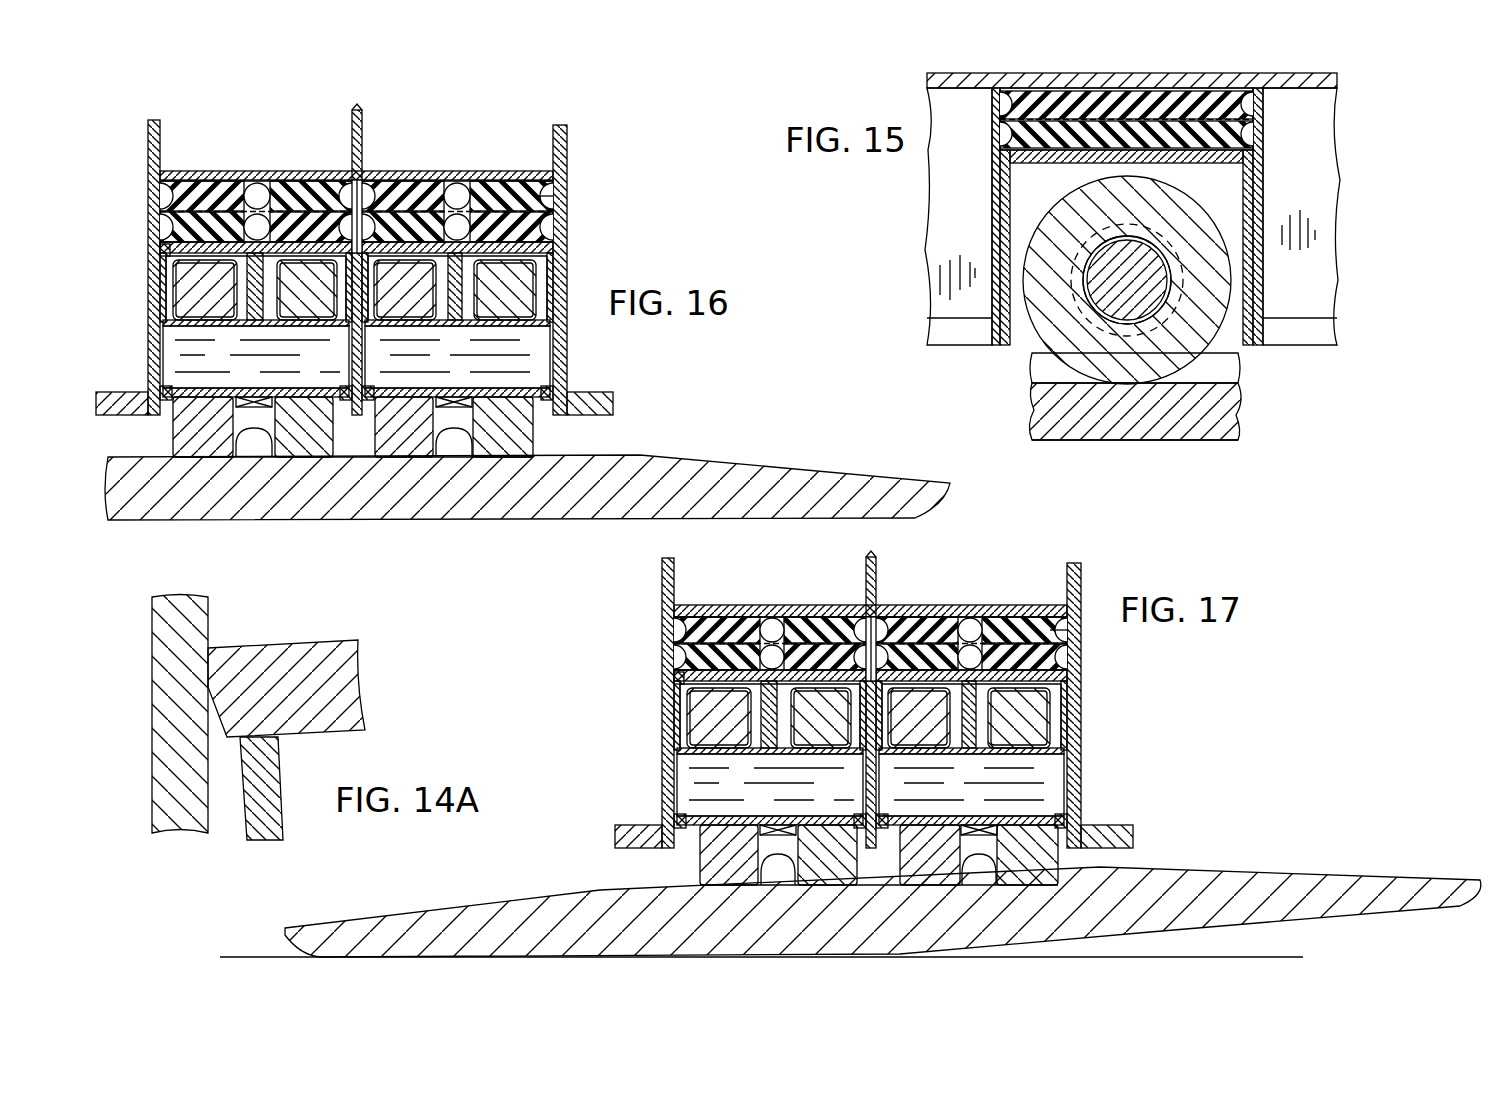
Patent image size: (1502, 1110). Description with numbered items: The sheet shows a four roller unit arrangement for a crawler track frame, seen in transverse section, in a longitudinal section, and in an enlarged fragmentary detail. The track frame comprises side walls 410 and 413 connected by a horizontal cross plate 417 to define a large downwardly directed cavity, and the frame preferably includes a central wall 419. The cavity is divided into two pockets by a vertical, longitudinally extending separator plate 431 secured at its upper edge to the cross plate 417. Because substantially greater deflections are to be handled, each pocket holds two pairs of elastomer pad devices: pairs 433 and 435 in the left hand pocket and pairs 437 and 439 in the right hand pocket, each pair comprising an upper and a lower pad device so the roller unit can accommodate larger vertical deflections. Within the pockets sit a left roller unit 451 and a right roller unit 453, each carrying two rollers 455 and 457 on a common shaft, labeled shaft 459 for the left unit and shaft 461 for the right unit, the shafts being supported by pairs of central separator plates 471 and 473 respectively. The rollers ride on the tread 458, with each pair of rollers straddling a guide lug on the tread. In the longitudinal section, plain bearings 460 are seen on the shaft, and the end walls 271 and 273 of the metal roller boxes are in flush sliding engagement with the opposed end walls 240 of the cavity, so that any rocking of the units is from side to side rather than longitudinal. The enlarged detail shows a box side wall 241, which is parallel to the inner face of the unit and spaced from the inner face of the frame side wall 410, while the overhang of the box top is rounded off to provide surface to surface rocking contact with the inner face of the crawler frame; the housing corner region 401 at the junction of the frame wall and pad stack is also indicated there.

In FIG. 15, the end walls of the cavity 240 is at (1000, 345).
In FIG. 14A, the side wall 241 is at (283, 825).
In FIG. 15, the end wall 271 is at (1000, 218).
In FIG. 15, the end wall 273 is at (1255, 182).
In FIG. 17, the housing corner 401 is at (631, 702).
In FIG. 16, the side wall 410 is at (150, 334).
In FIG. 17, the side wall 410 is at (644, 703).
In FIG. 14A, the side wall 410 is at (165, 742).
In FIG. 16, the side wall 413 is at (566, 344).
In FIG. 17, the side wall 413 is at (1112, 705).
In FIG. 16, the horizontal cross plate 417 is at (490, 185).
In FIG. 17, the horizontal cross plate 417 is at (870, 576).
In FIG. 16, the central wall 419 is at (365, 117).
In FIG. 17, the central wall 419 is at (903, 690).
In FIG. 16, the separator plate 431 is at (368, 198).
In FIG. 17, the separator plate 431 is at (899, 621).
In FIG. 16, the elastomer pad device 433 is at (190, 190).
In FIG. 17, the elastomer pad device 433 is at (870, 608).
In FIG. 15, the elastomer pad device 433 is at (1015, 138).
In FIG. 16, the elastomer pad device 435 is at (275, 190).
In FIG. 17, the elastomer pad device 435 is at (870, 615).
In FIG. 15, the elastomer pad device 435 is at (1020, 100).
In FIG. 16, the elastomer pad device 437 is at (410, 192).
In FIG. 17, the elastomer pad device 437 is at (971, 615).
In FIG. 16, the elastomer pad device 439 is at (535, 196).
In FIG. 17, the elastomer pad device 439 is at (1084, 581).
In FIG. 16, the roller unit 451 is at (162, 246).
In FIG. 17, the roller unit 451 is at (633, 693).
In FIG. 14A, the roller unit 451 is at (312, 708).
In FIG. 16, the roller unit 453 is at (552, 250).
In FIG. 17, the roller unit 453 is at (913, 656).
In FIG. 15, the roller unit 453 is at (1170, 158).
In FIG. 16, the roller 455 is at (176, 438).
In FIG. 17, the roller 455 is at (832, 855).
In FIG. 15, the roller 455 is at (1240, 405).
In FIG. 16, the roller 457 is at (320, 458).
In FIG. 17, the roller 457 is at (879, 929).
In FIG. 16, the tread 458 is at (778, 466).
In FIG. 17, the tread 458 is at (850, 876).
In FIG. 15, the tread 458 is at (1200, 442).
In FIG. 16, the shaft 459 is at (175, 366).
In FIG. 17, the shaft 459 is at (833, 782).
In FIG. 15, the shaft 459 is at (1155, 275).
In FIG. 15, the plain bearings 460 is at (1175, 300).
In FIG. 16, the shaft 461 is at (540, 372).
In FIG. 17, the shaft 461 is at (918, 807).
In FIG. 16, the central separator plates 471 is at (250, 465).
In FIG. 17, the central separator plates 471 is at (756, 905).
In FIG. 16, the central separator plates 473 is at (455, 405).
In FIG. 17, the central separator plates 473 is at (1002, 904).